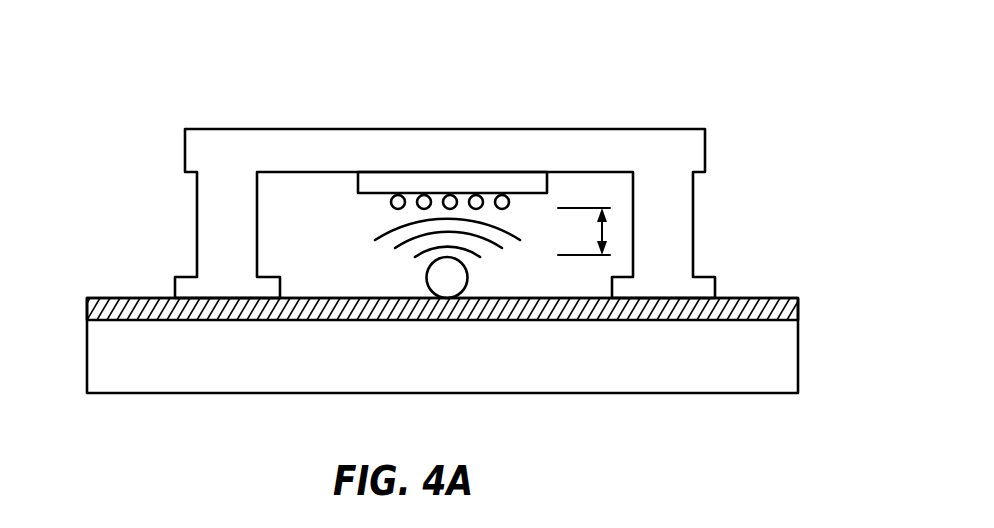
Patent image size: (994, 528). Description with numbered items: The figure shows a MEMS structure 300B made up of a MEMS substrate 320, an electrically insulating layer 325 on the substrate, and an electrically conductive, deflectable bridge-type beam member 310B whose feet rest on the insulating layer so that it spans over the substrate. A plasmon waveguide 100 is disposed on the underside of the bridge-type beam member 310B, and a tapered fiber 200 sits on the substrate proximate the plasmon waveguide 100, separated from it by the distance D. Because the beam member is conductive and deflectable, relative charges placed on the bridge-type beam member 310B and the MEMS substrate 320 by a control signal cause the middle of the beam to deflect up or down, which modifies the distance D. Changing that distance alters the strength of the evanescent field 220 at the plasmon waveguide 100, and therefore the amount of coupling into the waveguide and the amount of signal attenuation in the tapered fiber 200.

The MEMS structure 300B is at (150, 134).
The bridge-type beam member 310B is at (373, 128).
The plasmon waveguide 100 is at (358, 189).
The evanescent field 220 is at (520, 238).
The tapered fiber 200 is at (468, 278).
The distance D is at (608, 233).
The MEMS substrate 320 is at (798, 358).
The electrically insulating layer 325 is at (798, 300).